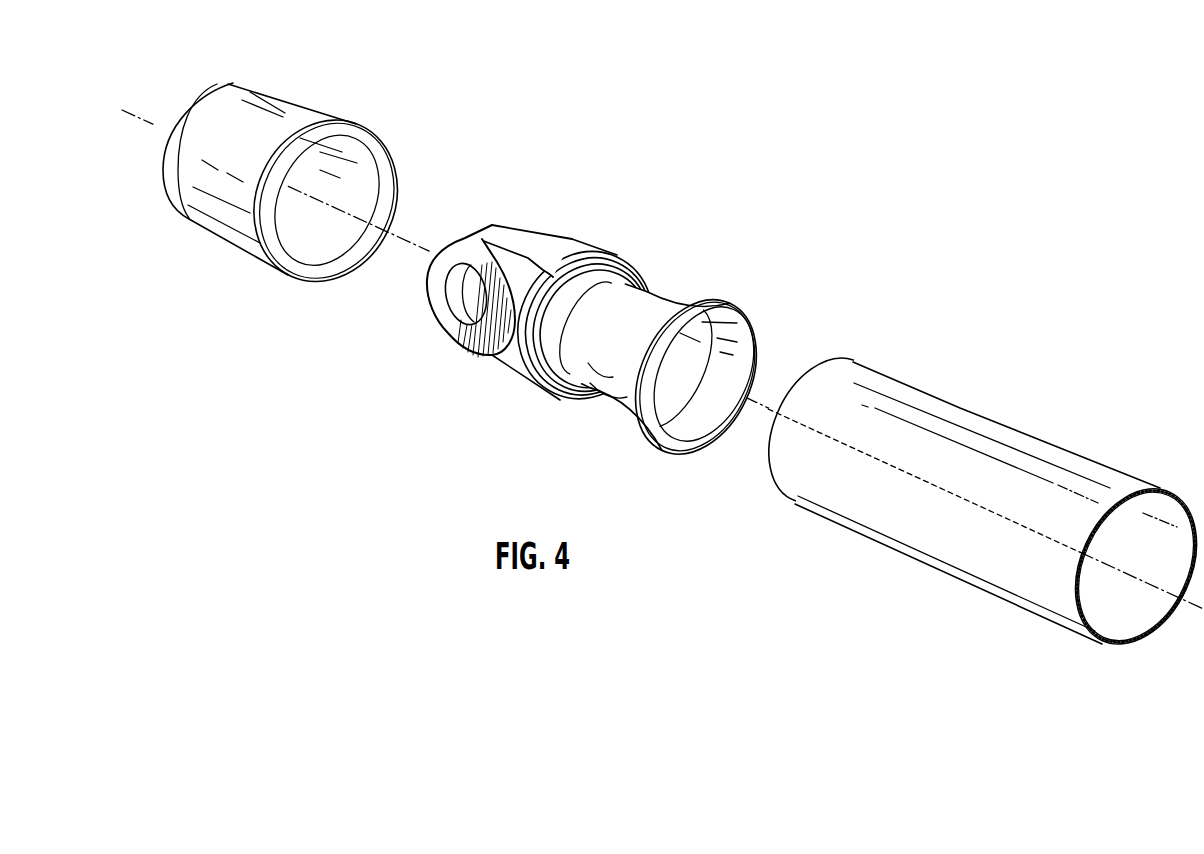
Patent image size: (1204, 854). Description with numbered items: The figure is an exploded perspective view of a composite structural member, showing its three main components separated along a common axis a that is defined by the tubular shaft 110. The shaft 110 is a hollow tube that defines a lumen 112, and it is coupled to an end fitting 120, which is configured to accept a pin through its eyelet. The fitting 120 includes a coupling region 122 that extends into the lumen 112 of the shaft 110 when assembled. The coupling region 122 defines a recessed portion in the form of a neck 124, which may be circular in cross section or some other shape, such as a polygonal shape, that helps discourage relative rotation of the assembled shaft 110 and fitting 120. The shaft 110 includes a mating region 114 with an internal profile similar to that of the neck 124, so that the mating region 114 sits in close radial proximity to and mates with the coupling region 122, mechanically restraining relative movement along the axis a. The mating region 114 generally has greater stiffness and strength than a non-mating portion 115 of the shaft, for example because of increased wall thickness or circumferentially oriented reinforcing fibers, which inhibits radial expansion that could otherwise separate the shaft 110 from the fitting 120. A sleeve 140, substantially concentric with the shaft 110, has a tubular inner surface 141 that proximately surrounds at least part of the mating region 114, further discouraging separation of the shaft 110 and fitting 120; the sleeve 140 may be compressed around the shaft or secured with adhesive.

The tubular shaft 110 is at (1082, 463).
The lumen 112 is at (1107, 614).
The mating region 114 is at (870, 513).
The non-mating portion 115 is at (1040, 614).
The end fitting 120 is at (520, 203).
The coupling region 122 is at (657, 280).
The neck 124 is at (616, 407).
The sleeve 140 is at (287, 113).
The tubular inner surface 141 is at (368, 146).
The axis a is at (983, 504).